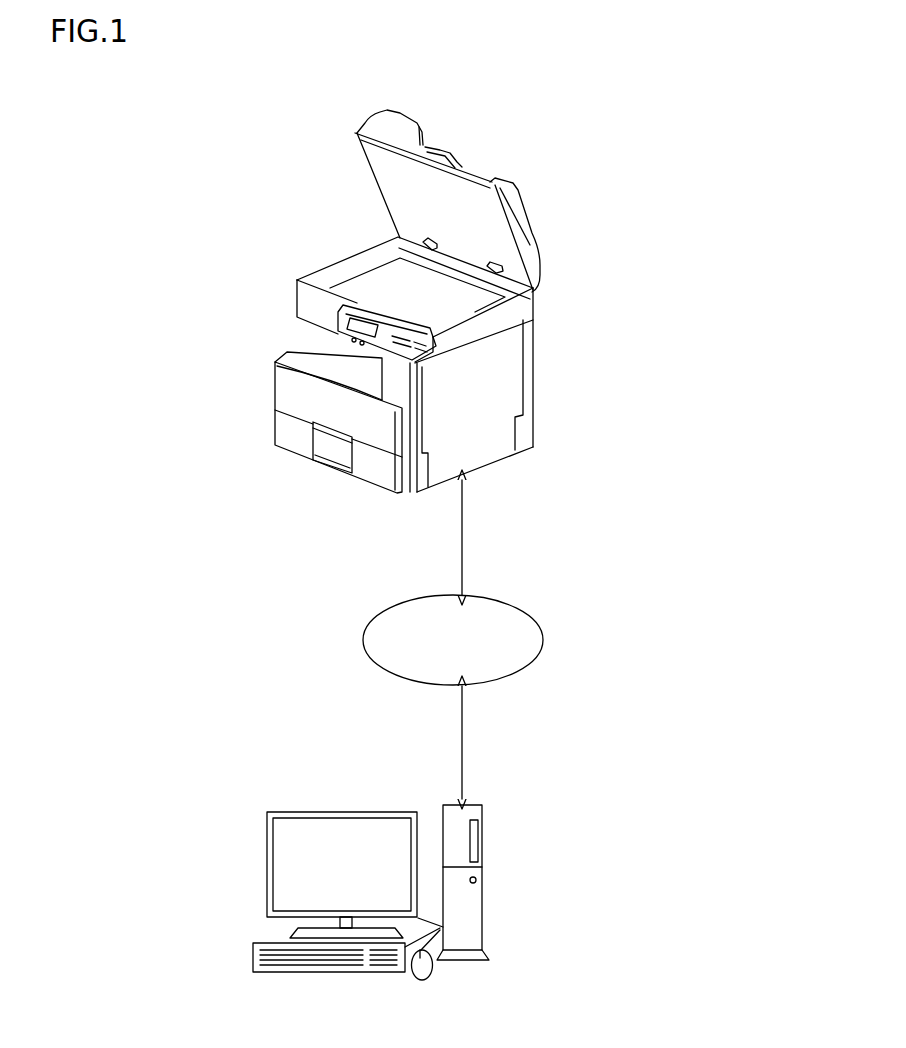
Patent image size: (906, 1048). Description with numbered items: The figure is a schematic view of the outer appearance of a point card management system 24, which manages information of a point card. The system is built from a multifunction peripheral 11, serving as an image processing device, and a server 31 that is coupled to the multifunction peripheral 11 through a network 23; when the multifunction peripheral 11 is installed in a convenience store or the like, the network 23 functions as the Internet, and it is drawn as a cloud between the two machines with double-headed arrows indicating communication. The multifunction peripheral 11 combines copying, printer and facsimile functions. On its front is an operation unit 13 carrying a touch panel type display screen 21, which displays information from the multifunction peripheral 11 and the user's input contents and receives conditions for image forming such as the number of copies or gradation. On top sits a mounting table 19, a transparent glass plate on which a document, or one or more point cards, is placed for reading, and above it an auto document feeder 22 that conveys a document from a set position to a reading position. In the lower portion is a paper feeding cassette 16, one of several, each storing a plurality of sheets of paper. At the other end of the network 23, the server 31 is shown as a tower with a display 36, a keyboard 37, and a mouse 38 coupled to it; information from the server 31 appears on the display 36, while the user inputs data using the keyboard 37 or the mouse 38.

The multifunction peripheral 11 is at (593, 416).
The operation unit 13 is at (342, 309).
The paper feeding cassette 16 is at (272, 425).
The mounting table 19 is at (403, 283).
The touch panel type display screen 21 is at (340, 328).
The auto document feeder (ADF) 22 is at (461, 145).
The network 23 is at (538, 622).
The point card management system 24 is at (753, 208).
The server 31 is at (462, 962).
The display 36 is at (320, 810).
The keyboard 37 is at (273, 973).
The mouse 38 is at (422, 981).